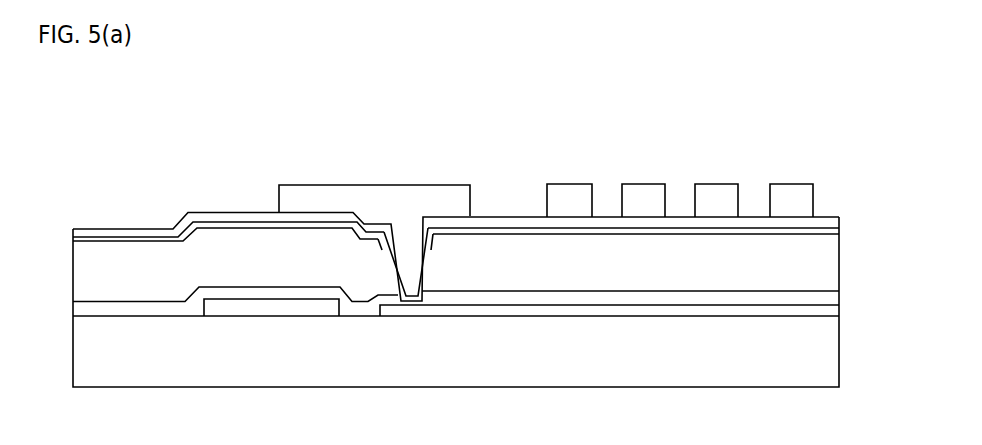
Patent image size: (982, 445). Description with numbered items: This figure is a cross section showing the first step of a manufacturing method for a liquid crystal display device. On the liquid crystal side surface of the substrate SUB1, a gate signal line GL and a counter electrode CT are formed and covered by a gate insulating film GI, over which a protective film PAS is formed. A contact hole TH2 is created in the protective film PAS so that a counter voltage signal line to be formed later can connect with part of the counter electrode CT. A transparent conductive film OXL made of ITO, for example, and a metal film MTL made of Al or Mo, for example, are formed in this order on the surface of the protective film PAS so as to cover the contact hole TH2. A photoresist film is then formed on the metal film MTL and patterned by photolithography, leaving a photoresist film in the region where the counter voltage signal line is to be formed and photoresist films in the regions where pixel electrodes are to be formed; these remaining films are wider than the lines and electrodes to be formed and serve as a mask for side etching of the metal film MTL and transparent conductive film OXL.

The substrate SUB1 is at (200, 353).
The gate signal line GL is at (258, 312).
The counter electrode CT is at (415, 310).
The gate insulating film GI is at (522, 297).
The protective film PAS is at (118, 278).
The metal film MTL is at (218, 217).
The transparent conductive film OXL is at (400, 240).
The contact hole TH2 is at (430, 258).